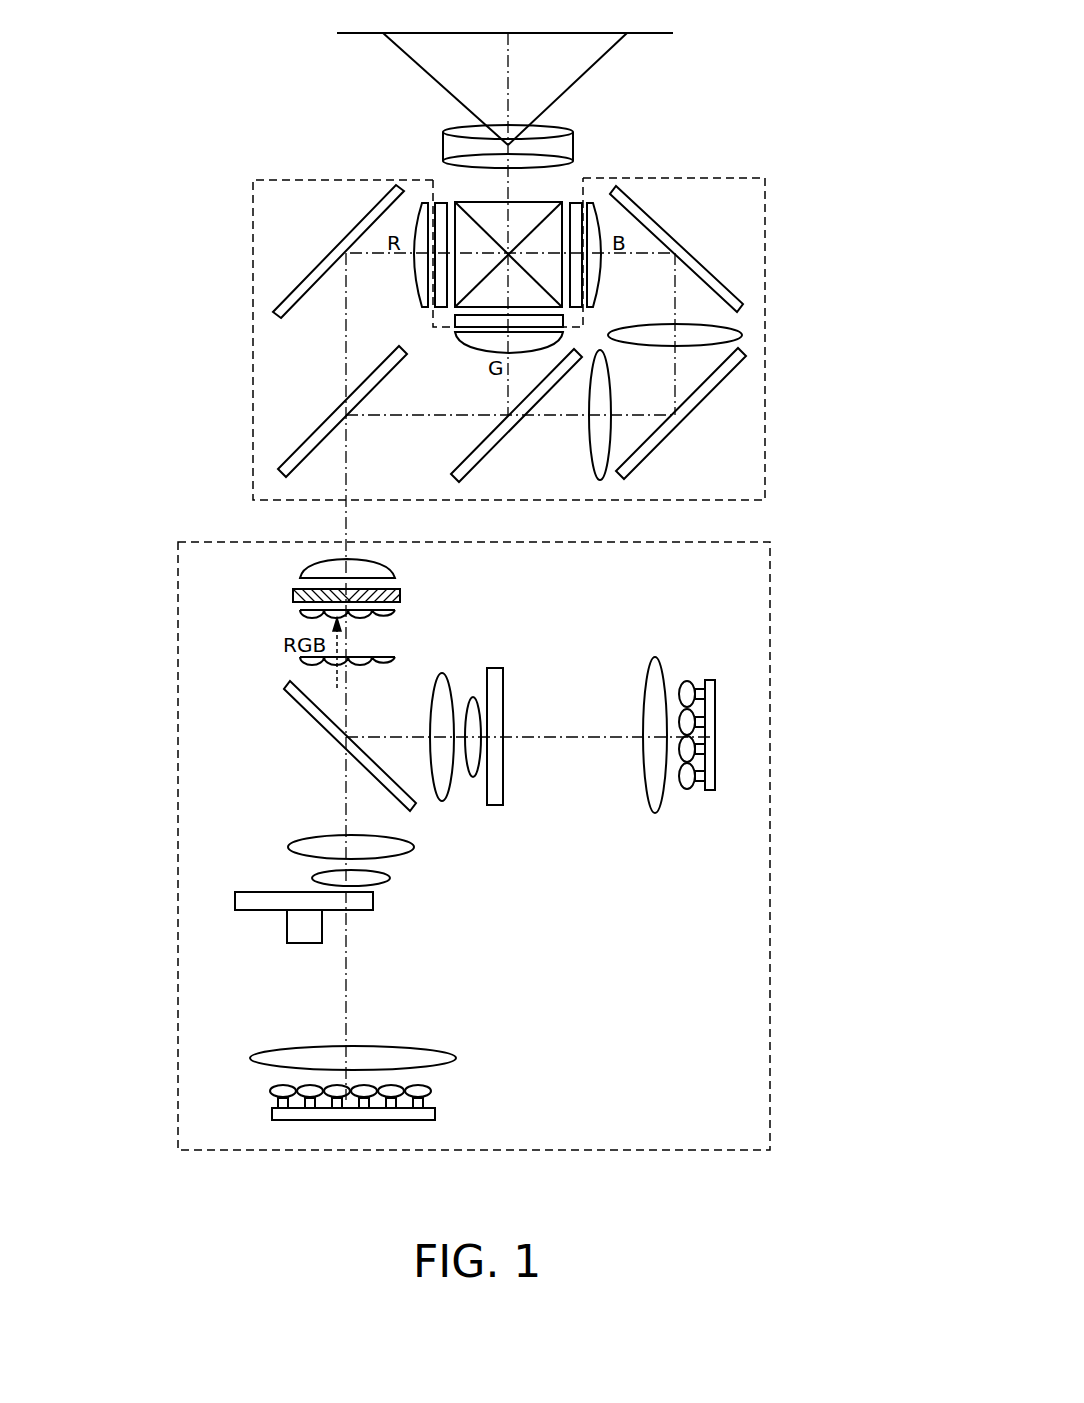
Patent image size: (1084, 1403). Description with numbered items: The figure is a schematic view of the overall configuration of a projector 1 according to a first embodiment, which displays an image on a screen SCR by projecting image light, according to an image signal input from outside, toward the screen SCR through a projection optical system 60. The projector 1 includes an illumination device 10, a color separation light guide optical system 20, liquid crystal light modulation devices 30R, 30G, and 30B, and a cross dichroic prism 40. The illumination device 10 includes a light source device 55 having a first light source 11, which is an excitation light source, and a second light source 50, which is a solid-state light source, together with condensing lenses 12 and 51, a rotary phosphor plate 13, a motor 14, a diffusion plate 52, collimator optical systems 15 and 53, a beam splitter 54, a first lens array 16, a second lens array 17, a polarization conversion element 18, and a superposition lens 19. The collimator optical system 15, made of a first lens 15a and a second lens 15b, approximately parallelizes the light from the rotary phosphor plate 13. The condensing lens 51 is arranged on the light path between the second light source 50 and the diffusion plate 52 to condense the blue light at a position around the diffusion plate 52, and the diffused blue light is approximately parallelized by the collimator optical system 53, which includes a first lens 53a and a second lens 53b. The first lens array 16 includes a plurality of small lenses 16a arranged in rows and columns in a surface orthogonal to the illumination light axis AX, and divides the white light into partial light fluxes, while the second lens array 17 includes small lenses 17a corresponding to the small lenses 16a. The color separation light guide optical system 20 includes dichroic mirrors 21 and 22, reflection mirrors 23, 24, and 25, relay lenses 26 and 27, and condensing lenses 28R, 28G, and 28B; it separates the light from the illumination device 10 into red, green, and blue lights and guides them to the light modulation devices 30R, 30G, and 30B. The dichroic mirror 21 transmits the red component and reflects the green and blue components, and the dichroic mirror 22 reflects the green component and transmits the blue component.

The projector 1 is at (782, 114).
The screen SCR is at (652, 36).
The projection optical system 60 is at (573, 140).
The color separation light guide optical system 20 is at (253, 365).
The cross dichroic prism 40 is at (520, 200).
The liquid crystal light modulation device 30R is at (437, 200).
The liquid crystal light modulation device 30B is at (578, 200).
The liquid crystal light modulation device 30G is at (454, 320).
The condensing lens 28R is at (410, 276).
The condensing lens 28B is at (605, 270).
The condensing lens 28G is at (451, 350).
The relay lens 27 is at (742, 335).
The relay lens 26 is at (590, 443).
The dichroic mirror 21 is at (298, 450).
The dichroic mirror 22 is at (457, 462).
The reflection mirror 23 is at (312, 283).
The reflection mirror 24 is at (663, 444).
The reflection mirror 25 is at (715, 275).
The illumination light axis AX is at (344, 526).
The illumination device 10 is at (770, 614).
The superposition lens 19 is at (398, 574).
The polarization conversion element 18 is at (400, 597).
The second lens array 17 is at (396, 614).
The small lens 17a is at (305, 618).
The first lens array 16 is at (398, 657).
The small lens 16a is at (305, 662).
The beam splitter 54 is at (313, 720).
The collimator optical system 53 is at (568, 585).
The first lens 53a is at (479, 696).
The second lens 53b is at (444, 678).
The diffusion plate 52 is at (504, 774).
The condensing lens 51 is at (655, 813).
The second light source 50 is at (688, 806).
The light source device 55 is at (650, 945).
The collimator optical system 15 is at (498, 830).
The first lens 15a is at (391, 874).
The second lens 15b is at (414, 844).
The rotary phosphor plate 13 is at (275, 883).
The motor 14 is at (305, 943).
The condensing lens 12 is at (410, 1055).
The first light source 11 is at (454, 1090).